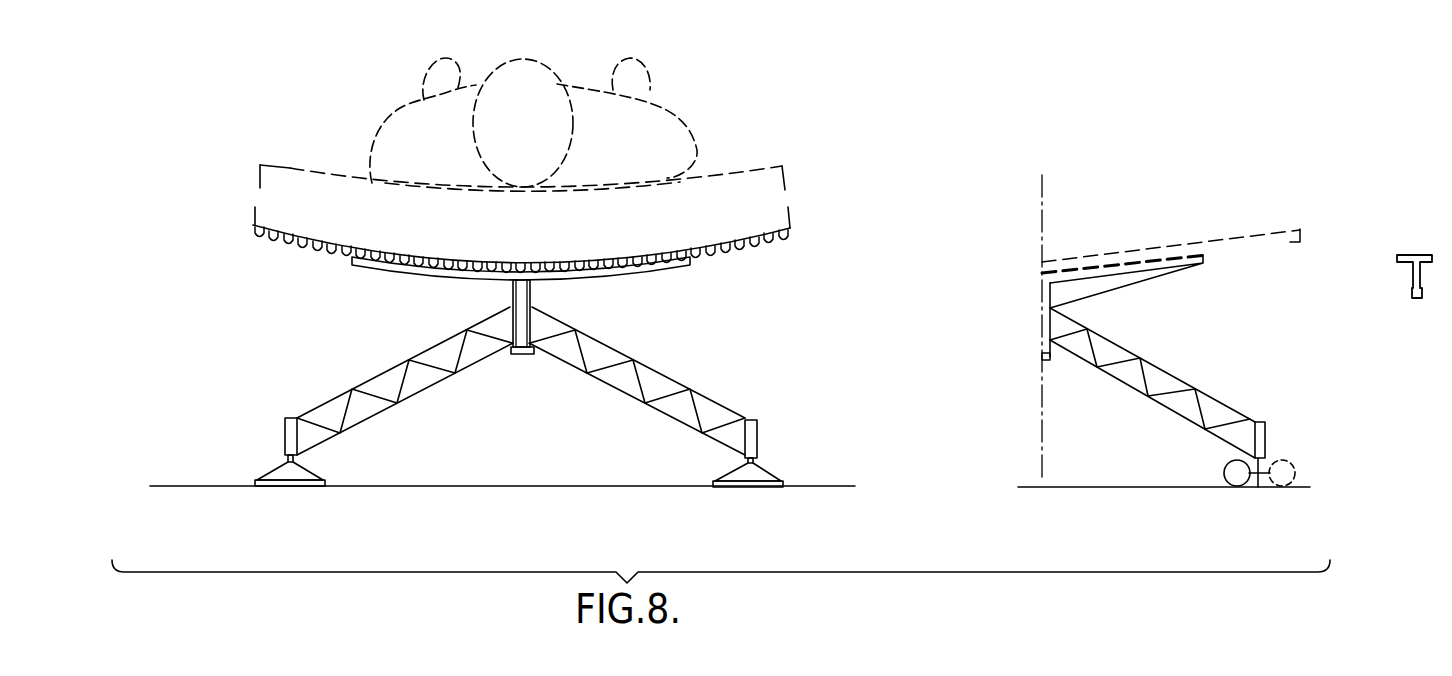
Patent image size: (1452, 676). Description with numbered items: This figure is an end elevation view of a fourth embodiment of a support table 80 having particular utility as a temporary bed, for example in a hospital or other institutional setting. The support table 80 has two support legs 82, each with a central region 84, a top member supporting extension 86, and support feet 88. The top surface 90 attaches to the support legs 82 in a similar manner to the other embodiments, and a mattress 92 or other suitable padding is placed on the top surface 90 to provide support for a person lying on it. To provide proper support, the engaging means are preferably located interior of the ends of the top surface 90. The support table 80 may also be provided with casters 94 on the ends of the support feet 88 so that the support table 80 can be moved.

The support table 80 is at (802, 194).
The support legs 82 is at (360, 343).
The central region 84 is at (537, 288).
The top member supporting extension 86 is at (667, 266).
The support feet 88 is at (672, 380).
The top surface 90 is at (753, 243).
The mattress 92 is at (737, 183).
The casters 94 is at (1233, 475).